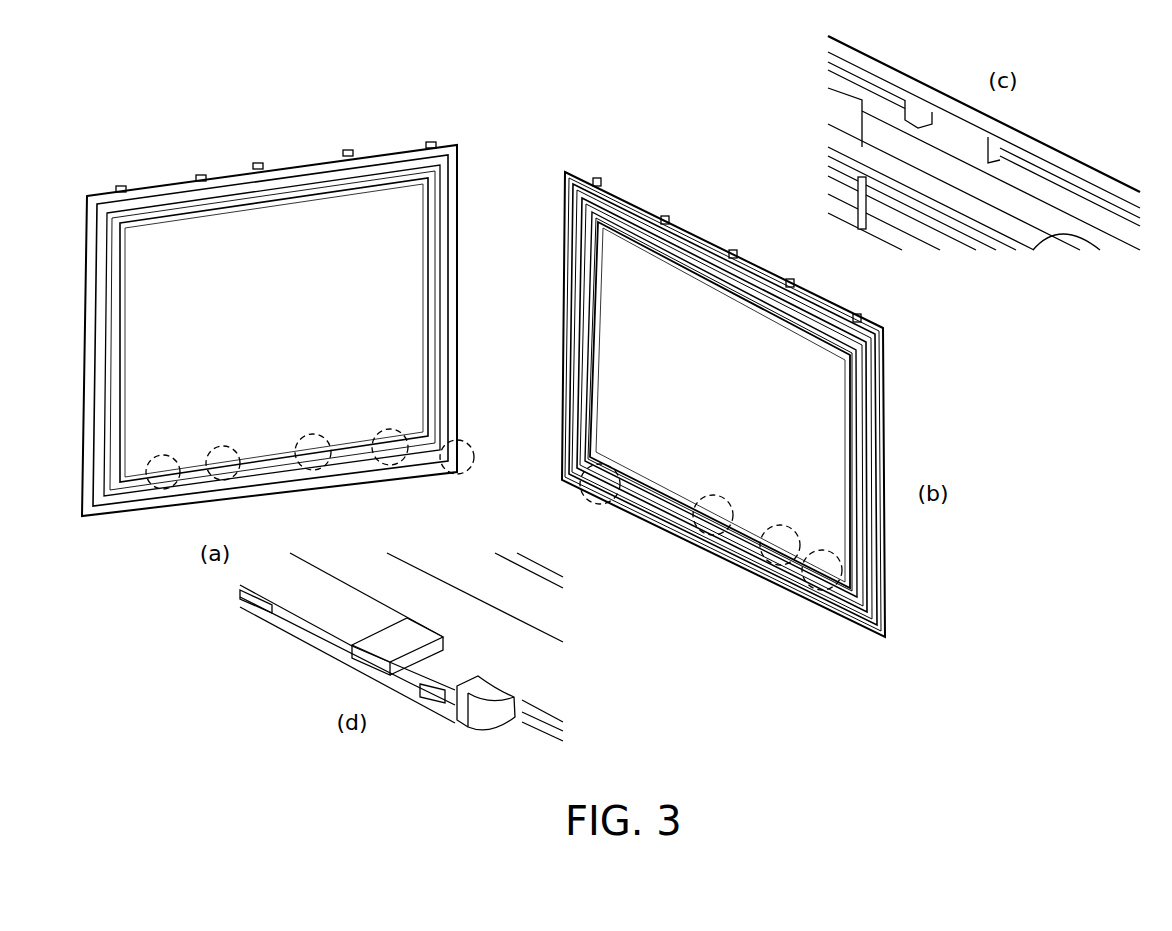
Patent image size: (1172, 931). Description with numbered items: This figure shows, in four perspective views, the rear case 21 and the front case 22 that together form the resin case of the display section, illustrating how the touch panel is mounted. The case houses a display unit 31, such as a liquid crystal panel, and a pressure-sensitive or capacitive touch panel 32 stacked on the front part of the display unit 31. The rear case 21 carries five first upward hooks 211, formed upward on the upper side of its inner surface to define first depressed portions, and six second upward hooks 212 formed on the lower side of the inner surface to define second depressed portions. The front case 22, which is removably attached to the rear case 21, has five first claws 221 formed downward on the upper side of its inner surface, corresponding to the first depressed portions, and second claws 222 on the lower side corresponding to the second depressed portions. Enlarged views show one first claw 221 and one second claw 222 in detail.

The rear case 21 is at (462, 254).
The first upward hooks 211 is at (257, 167).
The second upward hooks 212 is at (215, 500).
The front case 22 is at (556, 206).
The first claws 221 is at (665, 218).
The second claws 222 is at (690, 540).
The display unit 31 is at (403, 352).
The touch panel 32 is at (620, 396).